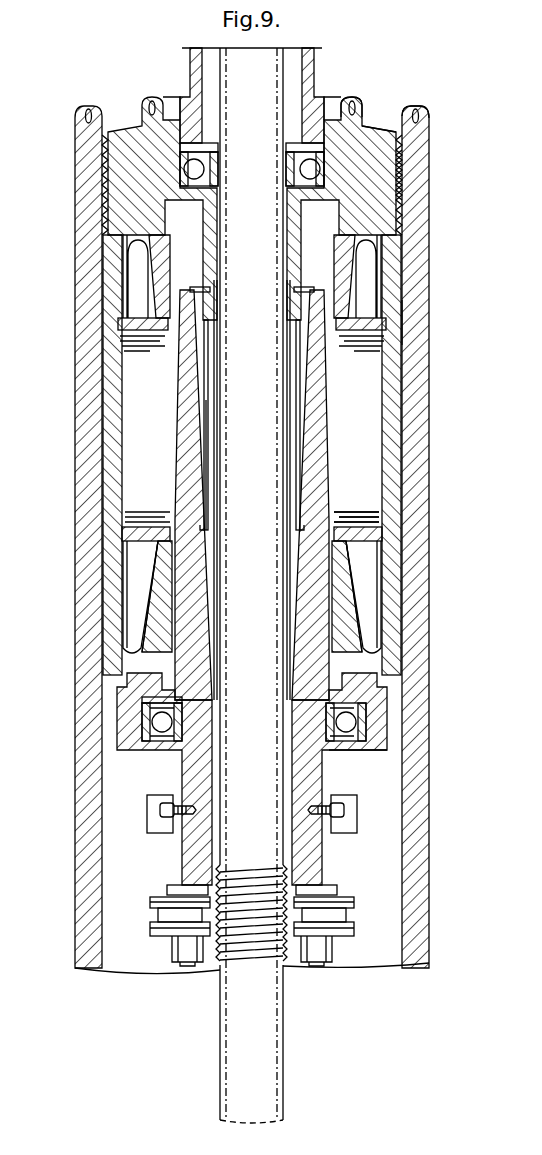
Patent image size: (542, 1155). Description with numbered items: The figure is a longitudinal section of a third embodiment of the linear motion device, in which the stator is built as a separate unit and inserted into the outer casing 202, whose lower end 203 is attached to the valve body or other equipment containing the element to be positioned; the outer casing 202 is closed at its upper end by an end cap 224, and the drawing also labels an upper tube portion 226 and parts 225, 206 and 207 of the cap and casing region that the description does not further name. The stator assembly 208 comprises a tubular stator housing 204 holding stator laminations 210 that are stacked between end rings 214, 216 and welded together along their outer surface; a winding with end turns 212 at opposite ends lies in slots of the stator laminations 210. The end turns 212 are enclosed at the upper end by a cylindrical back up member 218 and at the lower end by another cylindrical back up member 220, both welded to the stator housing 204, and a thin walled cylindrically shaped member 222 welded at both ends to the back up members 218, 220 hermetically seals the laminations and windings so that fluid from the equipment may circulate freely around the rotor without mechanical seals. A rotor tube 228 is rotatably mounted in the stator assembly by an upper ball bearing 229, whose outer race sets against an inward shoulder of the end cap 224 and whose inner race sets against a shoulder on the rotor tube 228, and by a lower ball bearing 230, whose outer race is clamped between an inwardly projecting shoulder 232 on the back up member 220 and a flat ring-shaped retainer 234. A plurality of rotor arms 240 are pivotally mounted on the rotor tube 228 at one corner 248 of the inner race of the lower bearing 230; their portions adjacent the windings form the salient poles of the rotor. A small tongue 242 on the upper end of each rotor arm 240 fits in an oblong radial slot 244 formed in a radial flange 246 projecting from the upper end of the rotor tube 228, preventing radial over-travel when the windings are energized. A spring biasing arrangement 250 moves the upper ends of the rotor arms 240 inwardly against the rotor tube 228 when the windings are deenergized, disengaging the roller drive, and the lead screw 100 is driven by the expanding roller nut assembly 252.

The lead screw 100 is at (272, 962).
The outer casing 202 is at (373, 268).
The lower end of outer casing 203 is at (84, 897).
The stator housing 204 is at (101, 242).
The cap thread 206 is at (403, 168).
The outer nub of cap 207 is at (423, 117).
The stator assembly 208 is at (130, 386).
The stator laminations 210 is at (372, 517).
The end turns 212 is at (134, 289).
The end ring 214 is at (405, 323).
The end ring 216 is at (384, 537).
The cylindrical back up member 218 is at (350, 279).
The cylindrical back up member 220 is at (362, 617).
The thin walled cylindrically shaped member 222 is at (362, 588).
The end cap 224 is at (364, 128).
The cap projection 225 is at (352, 118).
The upper tube 226 is at (304, 84).
The rotor tube 228 is at (208, 428).
The upper ball bearing 229 is at (210, 176).
The lower ball bearing 230 is at (183, 724).
The inwardly projecting shoulder 232 is at (322, 714).
The flat ring-shaped retainer 234 is at (384, 750).
The rotor arms 240 is at (307, 496).
The tongue 242 is at (196, 298).
The radial slot 244 is at (205, 305).
The radial flange 246 is at (284, 324).
The corner of inner race 248 is at (183, 703).
The spring biasing arrangement 250 is at (157, 834).
The roller nut assembly 252 is at (157, 898).